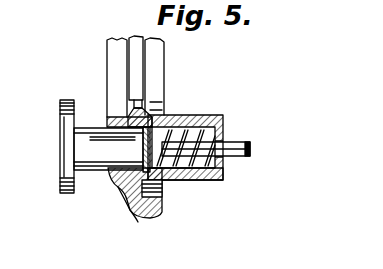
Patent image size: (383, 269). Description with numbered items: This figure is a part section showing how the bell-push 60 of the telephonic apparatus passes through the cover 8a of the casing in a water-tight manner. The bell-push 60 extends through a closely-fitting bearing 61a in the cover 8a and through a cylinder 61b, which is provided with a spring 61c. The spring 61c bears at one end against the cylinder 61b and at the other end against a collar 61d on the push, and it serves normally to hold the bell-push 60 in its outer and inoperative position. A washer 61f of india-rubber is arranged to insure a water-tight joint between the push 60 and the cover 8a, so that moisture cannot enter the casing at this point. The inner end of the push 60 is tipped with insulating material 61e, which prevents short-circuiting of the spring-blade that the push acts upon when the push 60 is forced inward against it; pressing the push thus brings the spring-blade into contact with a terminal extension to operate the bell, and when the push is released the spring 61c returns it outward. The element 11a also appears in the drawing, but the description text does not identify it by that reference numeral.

The pin 11a is at (131, 118).
The collar 61d is at (165, 117).
The spring 61c is at (222, 116).
The cylinder 61b is at (207, 182).
The insulating material 61e is at (252, 150).
The bell-push 60 is at (92, 170).
The closely-fitting bearing 61a is at (115, 188).
The washer of india-rubber 61f is at (163, 192).
The cover 8a is at (120, 188).